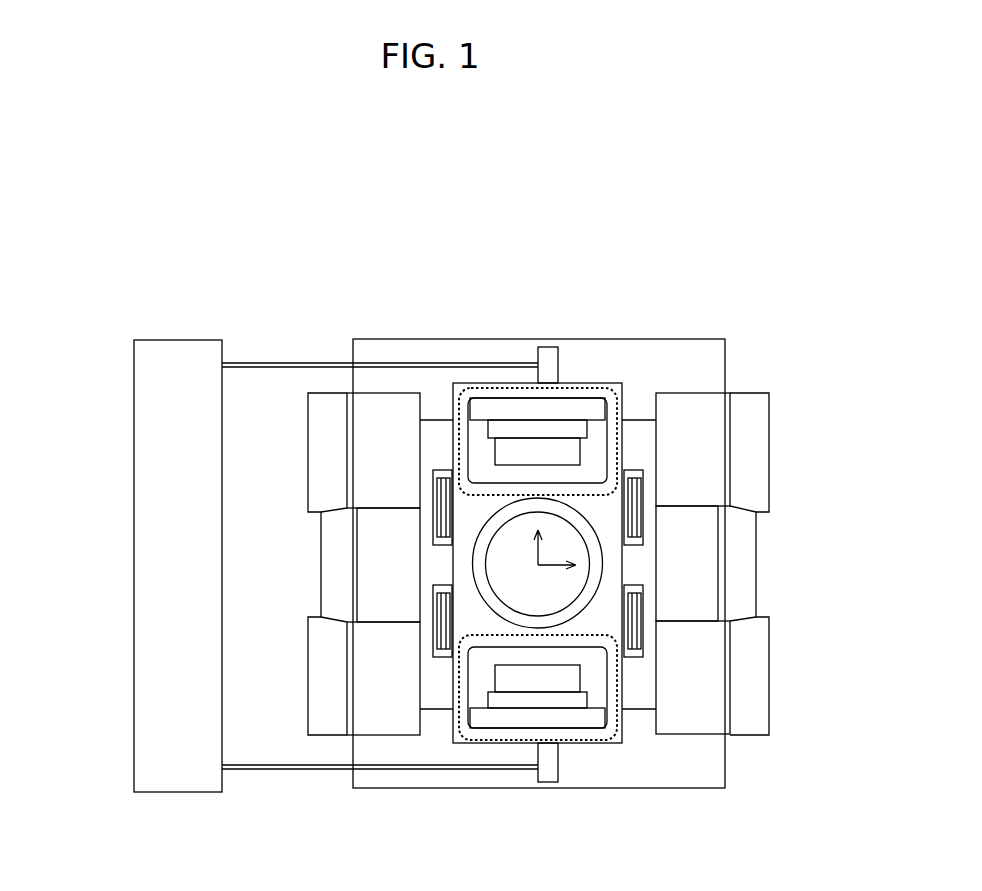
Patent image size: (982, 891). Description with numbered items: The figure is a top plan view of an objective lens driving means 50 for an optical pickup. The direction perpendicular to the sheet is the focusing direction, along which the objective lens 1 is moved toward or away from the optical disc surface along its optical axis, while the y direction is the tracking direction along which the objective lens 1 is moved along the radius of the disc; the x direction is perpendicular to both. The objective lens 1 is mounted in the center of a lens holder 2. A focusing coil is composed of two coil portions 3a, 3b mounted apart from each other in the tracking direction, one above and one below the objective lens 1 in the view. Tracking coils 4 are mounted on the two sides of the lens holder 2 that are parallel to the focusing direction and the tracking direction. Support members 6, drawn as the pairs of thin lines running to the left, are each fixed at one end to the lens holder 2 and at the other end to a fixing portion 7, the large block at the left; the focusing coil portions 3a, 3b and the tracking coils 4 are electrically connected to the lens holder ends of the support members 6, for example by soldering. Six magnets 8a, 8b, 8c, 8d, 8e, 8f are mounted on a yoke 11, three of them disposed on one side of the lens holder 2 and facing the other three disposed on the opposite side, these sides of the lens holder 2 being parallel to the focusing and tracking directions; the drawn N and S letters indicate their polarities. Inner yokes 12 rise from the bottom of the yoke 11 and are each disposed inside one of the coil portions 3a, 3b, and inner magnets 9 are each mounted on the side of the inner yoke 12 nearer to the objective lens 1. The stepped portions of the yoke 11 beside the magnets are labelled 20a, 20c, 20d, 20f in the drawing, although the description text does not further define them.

The objective lens driving means 50 is at (724, 242).
The objective lens 1 is at (558, 528).
The lens holder 2 is at (588, 625).
The coil portion 3a is at (490, 390).
The coil portion 3b is at (482, 735).
The tracking coils 4 is at (442, 473).
The support members 6 is at (296, 364).
The fixing portion 7 is at (150, 528).
The magnet 8a is at (370, 413).
The magnet 8b is at (367, 550).
The magnet 8c is at (372, 693).
The magnet 8d is at (690, 408).
The magnet 8e is at (695, 544).
The magnet 8f is at (702, 725).
The inner magnets 9 is at (517, 447).
The yoke 11 is at (327, 457).
The inner yokes 12 is at (562, 425).
The yoke step portion 20a is at (347, 510).
The yoke step portion 20c is at (347, 622).
The yoke step portion 20d is at (727, 508).
The yoke step portion 20f is at (725, 618).